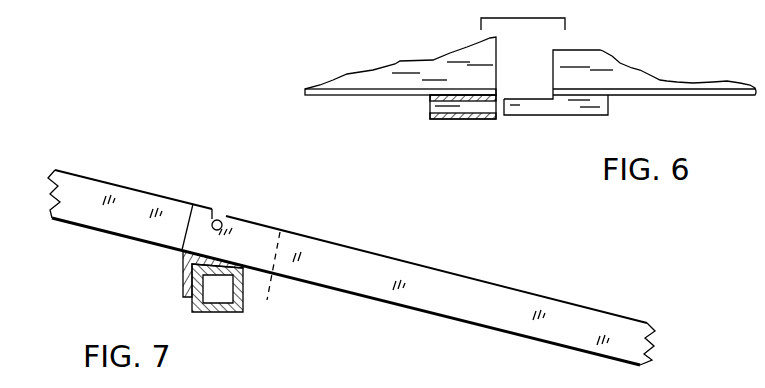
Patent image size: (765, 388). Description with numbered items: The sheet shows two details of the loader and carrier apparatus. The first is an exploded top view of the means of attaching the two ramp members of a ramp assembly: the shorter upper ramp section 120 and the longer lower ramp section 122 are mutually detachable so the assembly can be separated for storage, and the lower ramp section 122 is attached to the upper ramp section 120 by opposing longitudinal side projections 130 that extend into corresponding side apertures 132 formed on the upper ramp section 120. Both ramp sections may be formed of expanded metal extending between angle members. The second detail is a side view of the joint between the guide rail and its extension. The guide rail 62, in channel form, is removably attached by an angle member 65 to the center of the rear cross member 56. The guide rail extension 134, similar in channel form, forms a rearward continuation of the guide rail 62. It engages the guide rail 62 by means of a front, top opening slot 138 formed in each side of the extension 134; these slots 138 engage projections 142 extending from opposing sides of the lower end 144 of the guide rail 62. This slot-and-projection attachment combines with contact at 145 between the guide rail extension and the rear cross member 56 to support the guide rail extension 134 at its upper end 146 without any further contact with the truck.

In FIG. 6, the upper ramp section 120 is at (420, 73).
In FIG. 6, the lower ramp section 122 is at (629, 75).
In FIG. 6, the longitudinal side projections 130 is at (563, 117).
In FIG. 6, the side apertures 132 is at (475, 120).
In FIG. 7, the guide rail extension 134 is at (445, 285).
In FIG. 7, the top opening slot 138 is at (218, 219).
In FIG. 7, the projections 142 is at (225, 222).
In FIG. 7, the lower end 144 is at (287, 274).
In FIG. 7, the contact 145 is at (252, 271).
In FIG. 7, the upper end 146 is at (175, 211).
In FIG. 7, the guide rail 62 is at (122, 235).
In FIG. 7, the angle member 65 is at (183, 272).
In FIG. 7, the rear cross member 56 is at (213, 313).